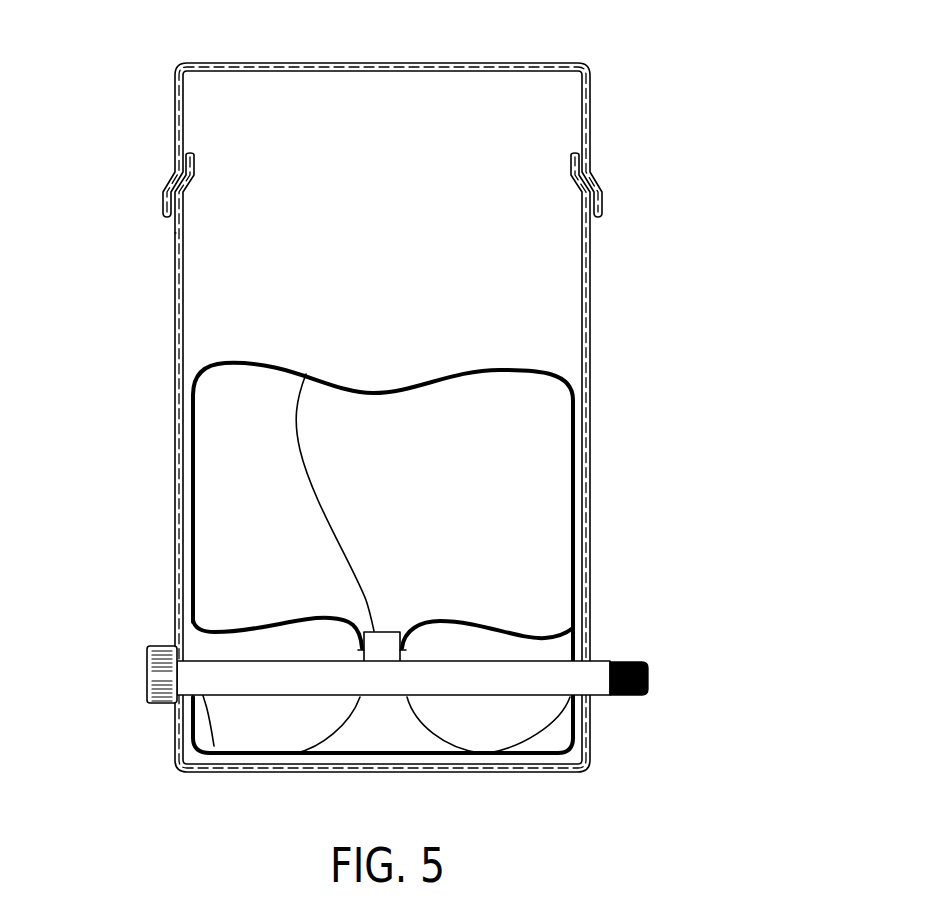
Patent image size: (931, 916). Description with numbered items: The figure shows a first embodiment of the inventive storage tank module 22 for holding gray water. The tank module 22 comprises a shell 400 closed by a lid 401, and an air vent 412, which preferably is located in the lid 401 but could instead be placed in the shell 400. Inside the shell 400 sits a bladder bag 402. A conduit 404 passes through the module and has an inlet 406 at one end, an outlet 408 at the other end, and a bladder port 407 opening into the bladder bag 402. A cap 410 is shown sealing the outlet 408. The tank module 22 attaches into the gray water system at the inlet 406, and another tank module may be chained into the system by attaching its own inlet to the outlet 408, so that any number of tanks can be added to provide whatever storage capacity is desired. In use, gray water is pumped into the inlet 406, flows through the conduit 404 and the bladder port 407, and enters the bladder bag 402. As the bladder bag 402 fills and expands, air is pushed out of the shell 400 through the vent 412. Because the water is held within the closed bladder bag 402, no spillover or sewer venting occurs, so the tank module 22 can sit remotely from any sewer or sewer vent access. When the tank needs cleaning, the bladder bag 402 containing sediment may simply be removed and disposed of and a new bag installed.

The storage tank module 22 is at (146, 233).
The shell 400 is at (428, 402).
The lid 401 is at (428, 124).
The bladder bag 402 is at (311, 536).
The conduit 404 is at (472, 667).
The inlet 406 is at (649, 682).
The bladder port 407 is at (398, 628).
The outlet 408 is at (182, 726).
The cap 410 is at (147, 665).
The air vent 412 is at (569, 62).